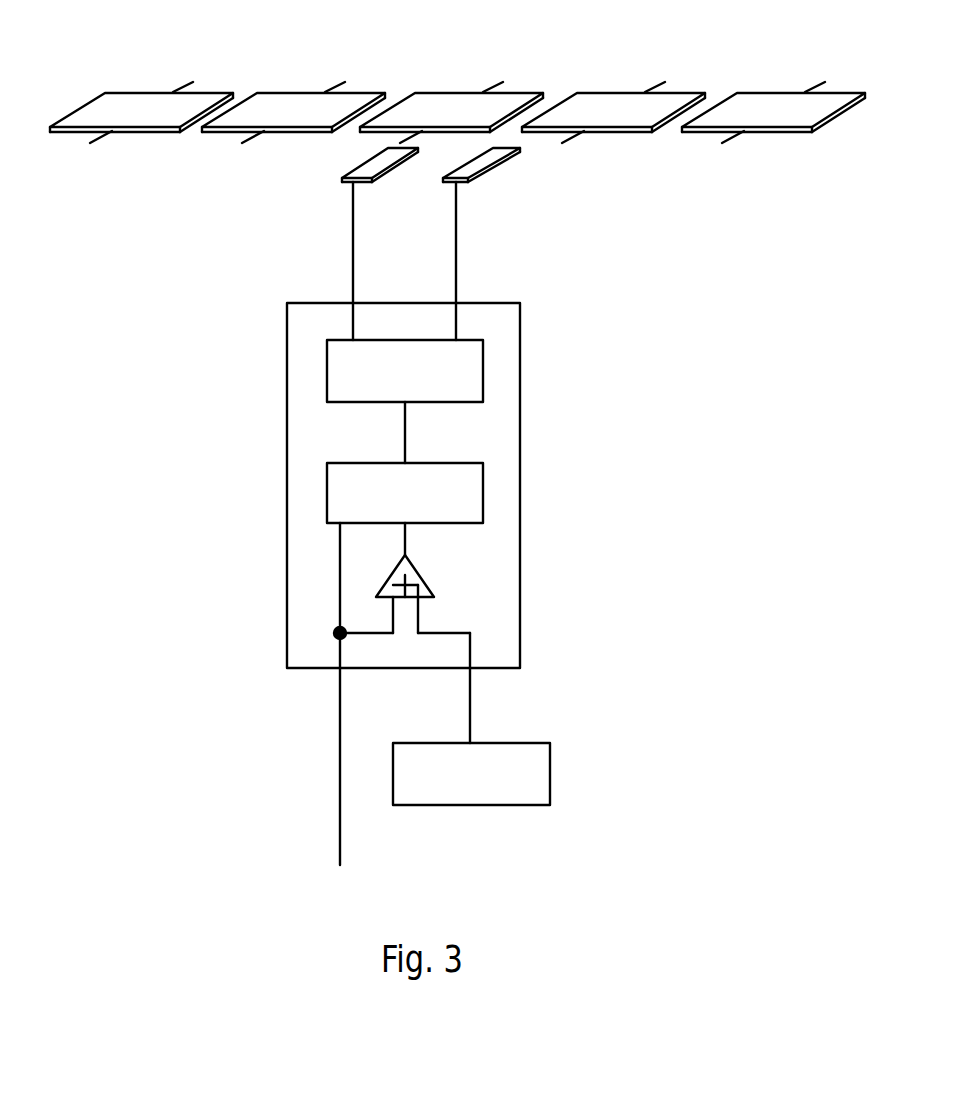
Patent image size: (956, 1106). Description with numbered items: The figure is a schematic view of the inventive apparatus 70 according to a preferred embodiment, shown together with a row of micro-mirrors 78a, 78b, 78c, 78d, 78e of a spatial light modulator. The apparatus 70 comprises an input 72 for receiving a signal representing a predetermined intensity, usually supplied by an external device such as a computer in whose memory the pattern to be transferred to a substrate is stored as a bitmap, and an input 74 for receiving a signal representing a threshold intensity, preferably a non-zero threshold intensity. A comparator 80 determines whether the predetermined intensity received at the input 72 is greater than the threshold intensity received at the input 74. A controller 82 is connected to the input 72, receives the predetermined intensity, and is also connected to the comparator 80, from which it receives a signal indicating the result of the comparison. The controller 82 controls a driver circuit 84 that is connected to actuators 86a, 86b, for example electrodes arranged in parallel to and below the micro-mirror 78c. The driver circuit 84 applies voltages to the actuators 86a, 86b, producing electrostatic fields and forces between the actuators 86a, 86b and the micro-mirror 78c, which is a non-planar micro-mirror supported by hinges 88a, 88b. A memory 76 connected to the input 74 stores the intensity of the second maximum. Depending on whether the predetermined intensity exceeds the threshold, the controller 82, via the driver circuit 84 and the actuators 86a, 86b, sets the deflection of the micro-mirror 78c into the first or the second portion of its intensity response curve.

The apparatus 70 is at (487, 460).
The input 72 is at (338, 670).
The input 74 is at (472, 670).
The memory 76 is at (510, 777).
The micro-mirror 78a is at (133, 108).
The micro-mirror 78b is at (298, 107).
The micro-mirror 78c is at (457, 107).
The micro-mirror 78d is at (633, 107).
The micro-mirror 78e is at (788, 108).
The comparator 80 is at (428, 588).
The controller 82 is at (452, 492).
The driver circuit 84 is at (452, 362).
The actuator 86a is at (348, 174).
The actuator 86b is at (500, 160).
The hinge 88a is at (408, 135).
The hinge 88b is at (488, 92).